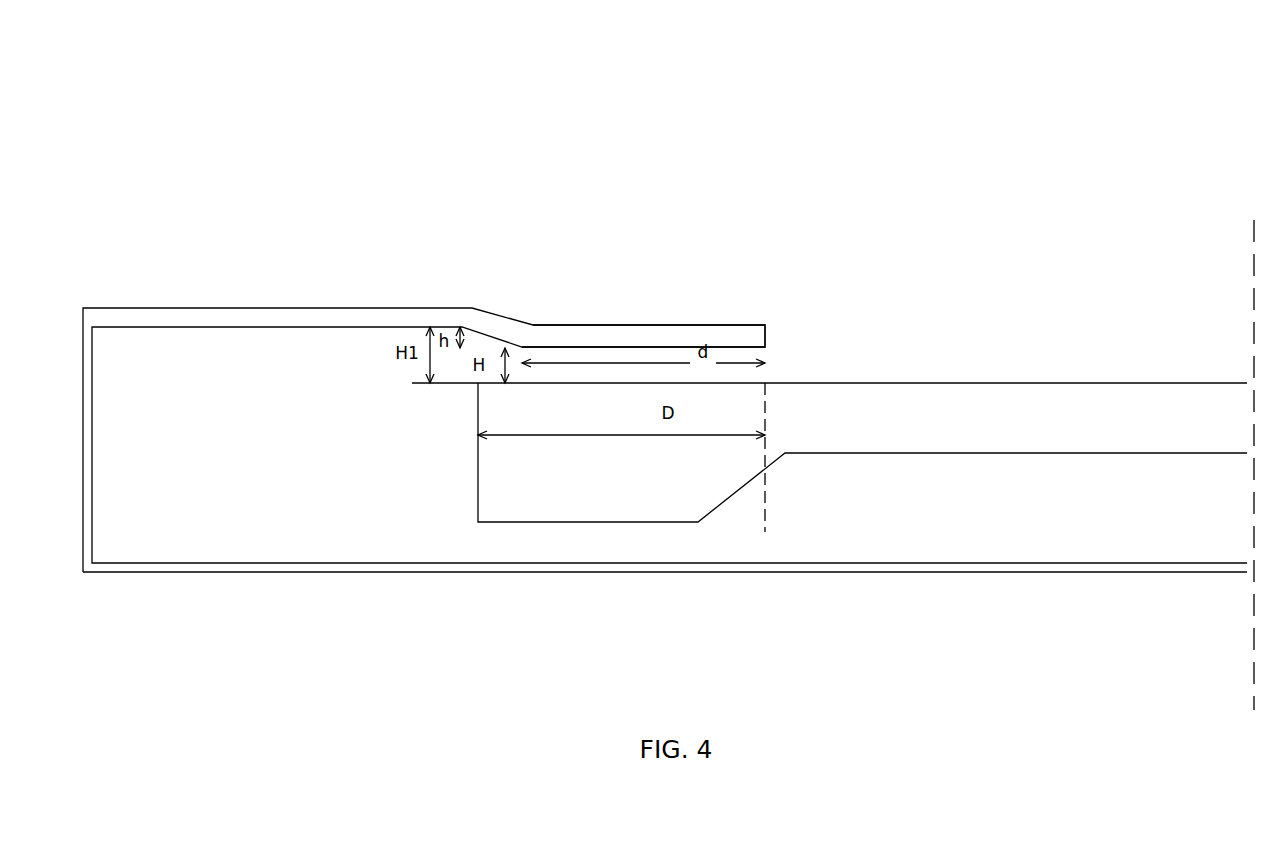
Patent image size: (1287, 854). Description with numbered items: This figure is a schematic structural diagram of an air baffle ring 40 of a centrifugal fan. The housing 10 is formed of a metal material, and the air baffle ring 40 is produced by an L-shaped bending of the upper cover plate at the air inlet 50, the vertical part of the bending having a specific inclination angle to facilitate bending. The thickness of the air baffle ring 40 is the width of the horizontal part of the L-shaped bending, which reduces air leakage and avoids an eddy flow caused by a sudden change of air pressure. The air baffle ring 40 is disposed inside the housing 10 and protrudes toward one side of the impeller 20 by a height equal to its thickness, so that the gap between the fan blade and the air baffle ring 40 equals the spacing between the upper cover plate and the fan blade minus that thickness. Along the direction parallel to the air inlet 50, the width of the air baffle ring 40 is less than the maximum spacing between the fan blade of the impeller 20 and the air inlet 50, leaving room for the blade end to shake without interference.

The housing 10 is at (248, 308).
The impeller 20 is at (640, 485).
The air baffle ring 40 is at (687, 327).
The air inlet 50 is at (928, 330).